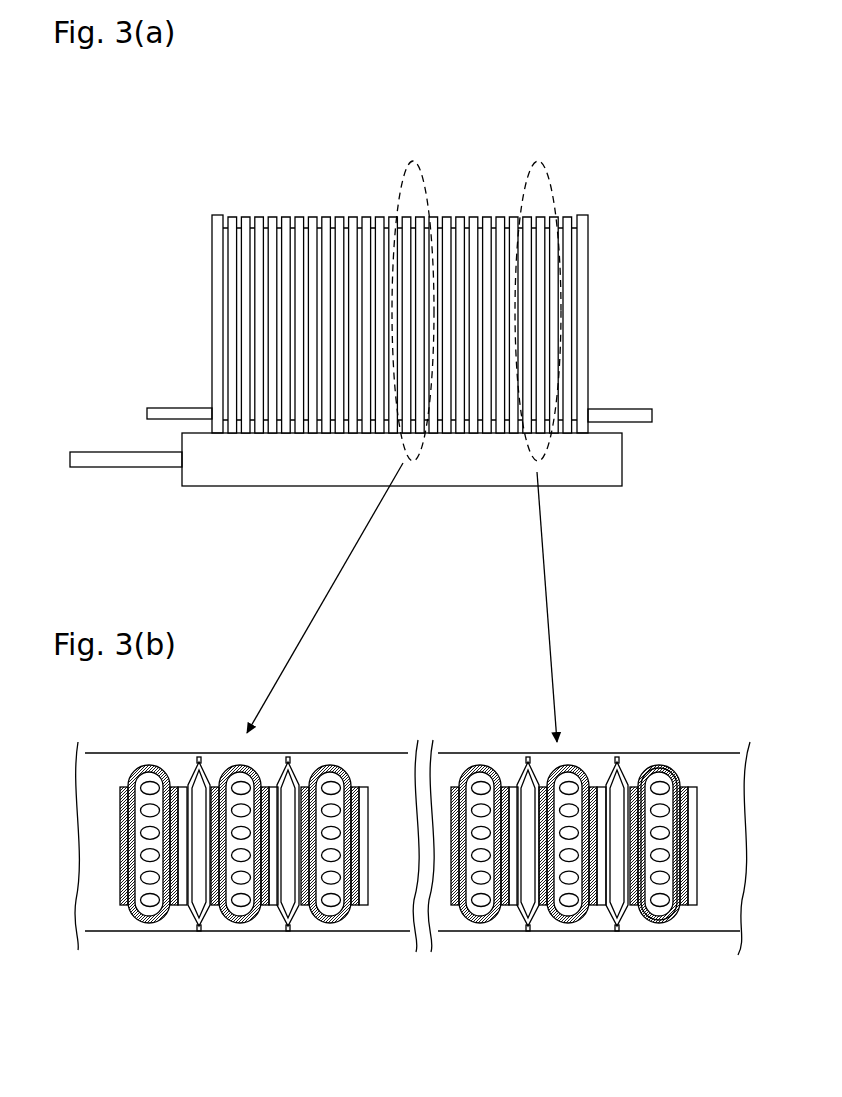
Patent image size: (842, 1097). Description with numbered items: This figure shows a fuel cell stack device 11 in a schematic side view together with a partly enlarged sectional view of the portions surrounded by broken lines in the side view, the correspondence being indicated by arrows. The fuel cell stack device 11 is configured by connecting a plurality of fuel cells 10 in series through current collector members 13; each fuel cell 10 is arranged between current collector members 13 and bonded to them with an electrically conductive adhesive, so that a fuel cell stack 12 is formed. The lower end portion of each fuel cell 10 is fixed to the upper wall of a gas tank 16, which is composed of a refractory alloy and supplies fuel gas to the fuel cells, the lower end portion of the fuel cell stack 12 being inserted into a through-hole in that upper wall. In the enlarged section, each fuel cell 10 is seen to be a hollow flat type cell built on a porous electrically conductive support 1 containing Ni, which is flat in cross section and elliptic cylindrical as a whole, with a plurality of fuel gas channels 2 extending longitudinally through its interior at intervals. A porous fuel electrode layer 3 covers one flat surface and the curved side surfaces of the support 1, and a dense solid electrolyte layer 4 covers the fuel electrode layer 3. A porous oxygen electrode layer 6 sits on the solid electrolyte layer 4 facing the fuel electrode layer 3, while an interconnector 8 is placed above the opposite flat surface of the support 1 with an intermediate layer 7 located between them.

In FIG. 3A, the fuel cell stack device 11 is at (236, 94).
In FIG. 3A, the fuel cell stack 12 is at (212, 200).
In FIG. 3A, the current collector member 13 is at (333, 232).
In FIG. 3B, the current collector member 13 is at (618, 775).
In FIG. 3A, the fuel cell 10 is at (467, 222).
In FIG. 3A, the gas tank 16 is at (622, 469).
In FIG. 3B, the electrically conductive support 1 is at (640, 928).
In FIG. 3B, the fuel gas channel 2 is at (640, 916).
In FIG. 3B, the fuel electrode layer 3 is at (669, 921).
In FIG. 3B, the solid electrolyte layer 4 is at (654, 923).
In FIG. 3B, the oxygen electrode layer 6 is at (634, 793).
In FIG. 3B, the intermediate layer 7 is at (679, 800).
In FIG. 3B, the interconnector 8 is at (686, 790).